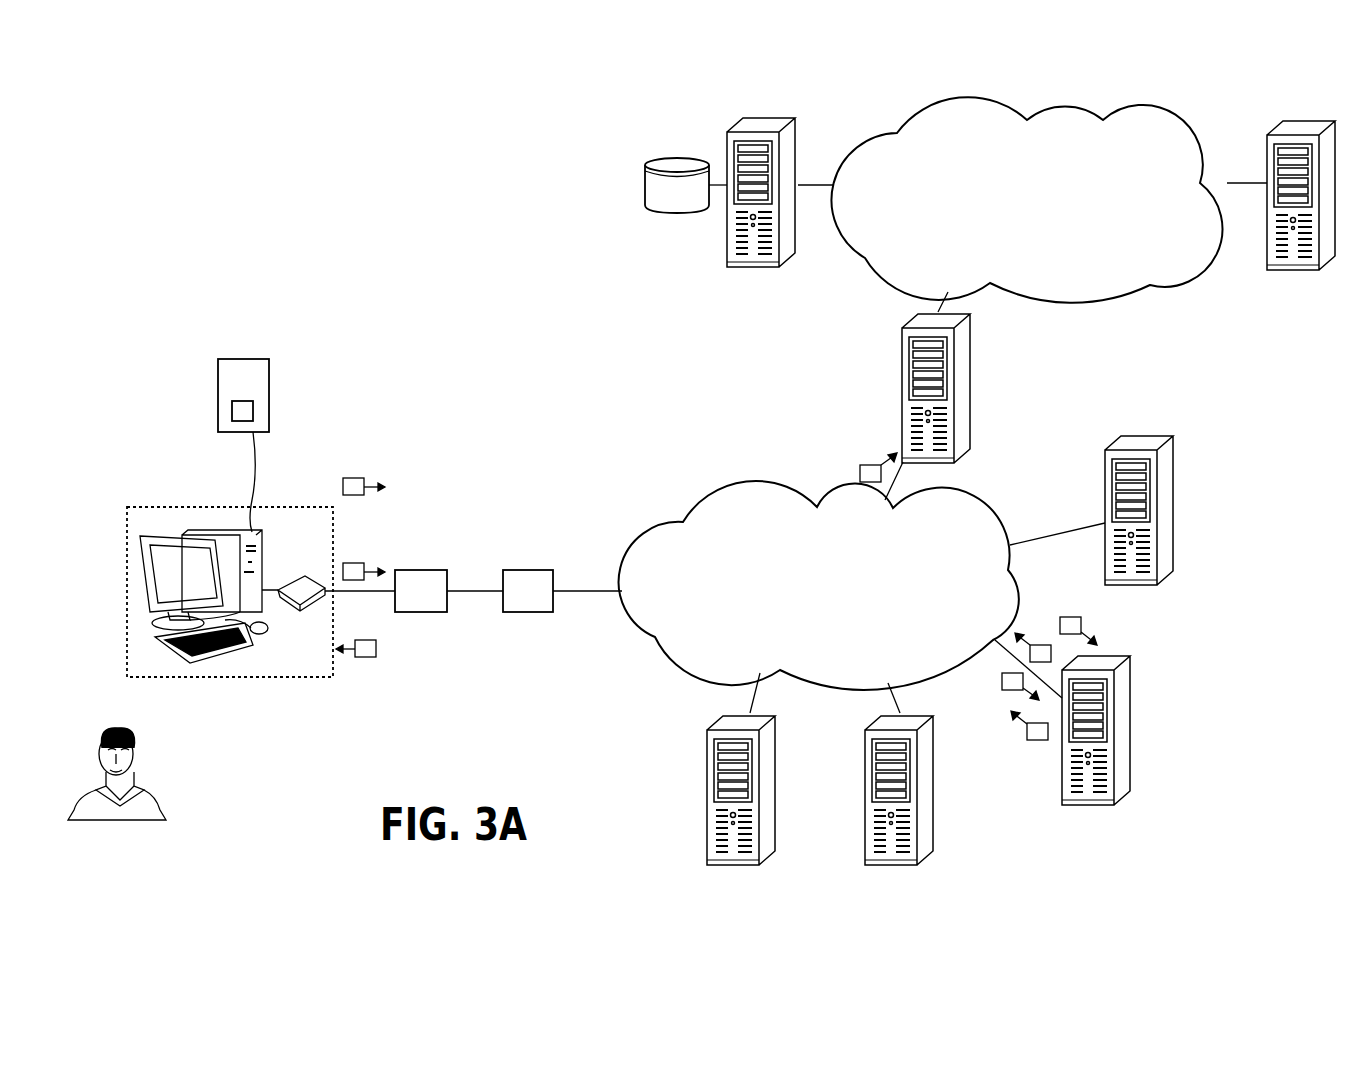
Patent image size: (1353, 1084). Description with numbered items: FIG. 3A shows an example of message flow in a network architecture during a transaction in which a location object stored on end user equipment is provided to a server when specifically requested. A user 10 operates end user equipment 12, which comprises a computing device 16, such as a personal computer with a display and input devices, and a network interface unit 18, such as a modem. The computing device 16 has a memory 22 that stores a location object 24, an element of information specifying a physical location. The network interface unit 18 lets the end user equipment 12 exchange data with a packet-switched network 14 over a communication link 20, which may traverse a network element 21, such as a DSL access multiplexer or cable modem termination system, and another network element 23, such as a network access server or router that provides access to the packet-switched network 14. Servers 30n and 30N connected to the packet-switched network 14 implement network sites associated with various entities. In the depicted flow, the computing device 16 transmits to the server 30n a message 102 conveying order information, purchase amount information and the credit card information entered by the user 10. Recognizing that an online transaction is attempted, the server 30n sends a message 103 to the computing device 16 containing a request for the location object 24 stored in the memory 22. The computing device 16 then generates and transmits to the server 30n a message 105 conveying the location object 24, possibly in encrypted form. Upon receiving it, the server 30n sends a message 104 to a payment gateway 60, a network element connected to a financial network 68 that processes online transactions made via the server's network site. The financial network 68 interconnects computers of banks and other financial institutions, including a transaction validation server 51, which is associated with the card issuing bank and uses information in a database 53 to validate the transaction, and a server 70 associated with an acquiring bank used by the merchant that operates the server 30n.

The user 10 is at (104, 734).
The end user equipment 12 is at (120, 582).
The packet-switched network 14 is at (819, 585).
The computing device 16 is at (226, 535).
The network interface unit 18 is at (303, 585).
The communication link 20 is at (613, 613).
The network element 21 is at (421, 591).
The memory 22 is at (220, 445).
The network element 23 is at (528, 591).
The location object 24 is at (232, 412).
The server 30N is at (1130, 587).
The server 30n is at (1085, 805).
The transaction validation server 51 is at (763, 122).
The database 53 is at (686, 185).
The payment gateway 60 is at (900, 392).
The financial network 68 is at (1027, 200).
The server 70 is at (1300, 123).
The message 102 is at (352, 563).
The message 103 is at (370, 658).
The message 104 is at (860, 474).
The message 105 is at (352, 478).